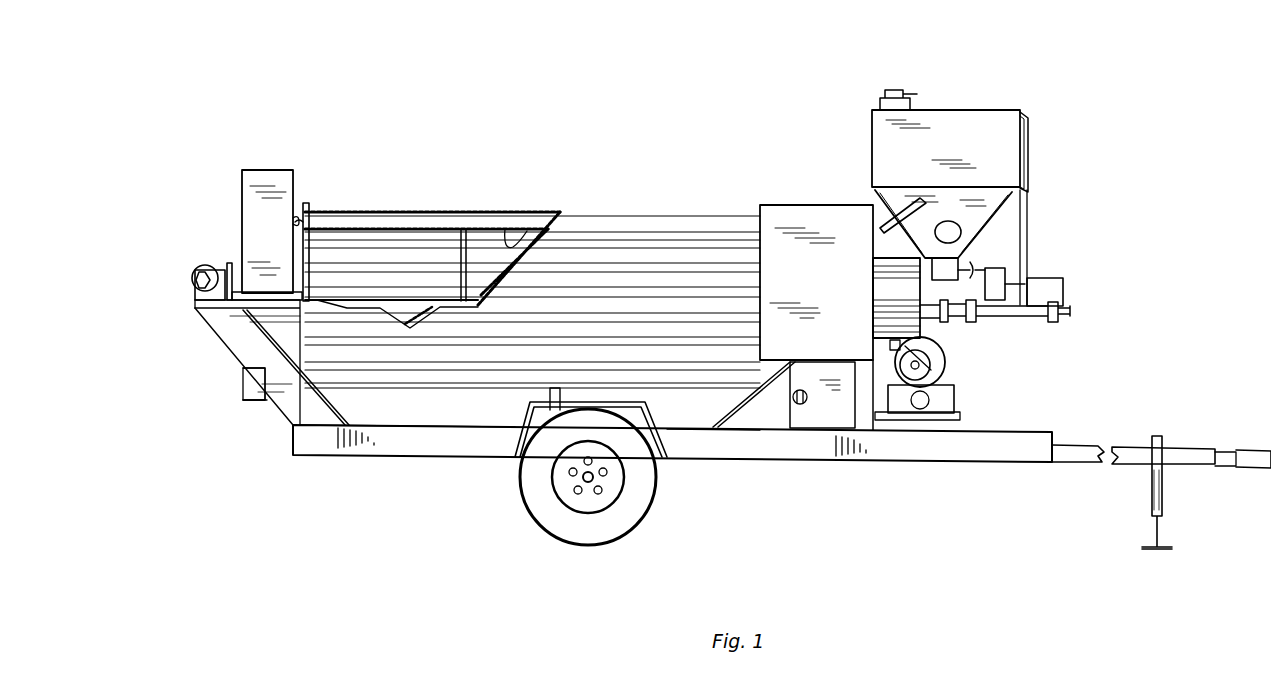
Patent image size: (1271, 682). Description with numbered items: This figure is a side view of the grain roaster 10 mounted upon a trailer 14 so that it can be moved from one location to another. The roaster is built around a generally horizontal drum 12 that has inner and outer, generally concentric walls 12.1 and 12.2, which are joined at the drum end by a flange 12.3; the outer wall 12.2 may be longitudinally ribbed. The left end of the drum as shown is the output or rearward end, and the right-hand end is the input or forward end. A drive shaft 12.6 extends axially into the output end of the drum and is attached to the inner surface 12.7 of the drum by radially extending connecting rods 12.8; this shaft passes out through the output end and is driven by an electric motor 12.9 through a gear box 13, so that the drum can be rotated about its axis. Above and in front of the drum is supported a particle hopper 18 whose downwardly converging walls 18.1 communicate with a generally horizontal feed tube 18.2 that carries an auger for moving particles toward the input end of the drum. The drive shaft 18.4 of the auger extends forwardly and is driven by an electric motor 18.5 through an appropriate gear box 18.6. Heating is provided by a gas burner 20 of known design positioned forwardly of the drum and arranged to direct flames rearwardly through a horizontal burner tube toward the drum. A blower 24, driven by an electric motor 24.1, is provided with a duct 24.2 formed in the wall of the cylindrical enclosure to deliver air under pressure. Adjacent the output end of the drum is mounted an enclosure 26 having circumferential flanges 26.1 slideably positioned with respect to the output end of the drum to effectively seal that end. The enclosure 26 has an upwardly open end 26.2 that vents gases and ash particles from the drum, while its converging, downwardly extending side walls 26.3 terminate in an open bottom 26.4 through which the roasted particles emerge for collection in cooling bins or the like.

The grain roaster 10 is at (668, 186).
The drum 12 is at (465, 212).
The inner wall 12.1 is at (420, 228).
The outer wall 12.2 is at (372, 210).
The flange 12.3 is at (310, 215).
The drive shaft 12.6 is at (413, 305).
The inner surface 12.7 is at (520, 237).
The connecting rods 12.8 is at (312, 285).
The electric motor 12.9 is at (205, 268).
The gear box 13 is at (222, 298).
The trailer 14 is at (380, 447).
The particle hopper 18 is at (968, 110).
The downwardly converging walls 18.1 is at (1015, 197).
The feed tube 18.2 is at (932, 287).
The drive shaft 18.4 is at (972, 272).
The electric motor 18.5 is at (1062, 292).
The gear box 18.6 is at (1008, 276).
The gas burner 20 is at (1000, 327).
The blower 24 is at (958, 377).
The electric motor 24.1 is at (935, 372).
The duct 24.2 is at (872, 346).
The enclosure 26 is at (245, 207).
The circumferential flanges 26.1 is at (297, 222).
The upwardly open end 26.2 is at (262, 178).
The side walls 26.3 is at (243, 386).
The open bottom 26.4 is at (262, 405).